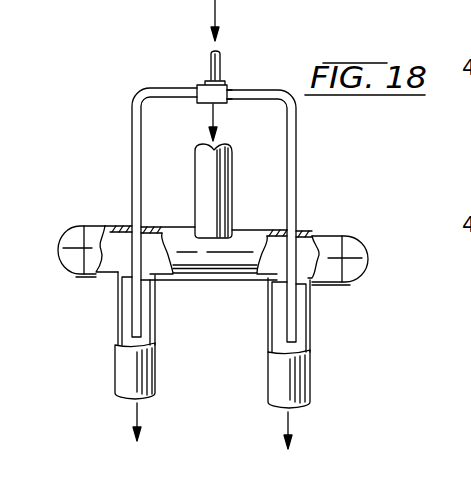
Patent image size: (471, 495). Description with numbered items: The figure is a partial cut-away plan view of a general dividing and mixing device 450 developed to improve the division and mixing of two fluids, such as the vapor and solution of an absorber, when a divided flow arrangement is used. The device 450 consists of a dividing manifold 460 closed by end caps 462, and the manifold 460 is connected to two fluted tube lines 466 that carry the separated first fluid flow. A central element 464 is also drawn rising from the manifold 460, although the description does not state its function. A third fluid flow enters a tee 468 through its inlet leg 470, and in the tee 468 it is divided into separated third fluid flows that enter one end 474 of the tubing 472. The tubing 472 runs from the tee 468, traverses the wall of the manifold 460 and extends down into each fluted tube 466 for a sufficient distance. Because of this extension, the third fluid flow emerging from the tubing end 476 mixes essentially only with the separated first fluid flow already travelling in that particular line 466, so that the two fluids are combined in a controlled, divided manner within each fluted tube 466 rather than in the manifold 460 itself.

The dividing and mixing device 450 is at (116, 196).
The dividing manifold 460 is at (202, 257).
The end caps 462 is at (351, 247).
The central nozzle 464 is at (205, 184).
The fluted tube lines 466 is at (125, 364).
The tee 468 is at (222, 93).
The inlet leg 470 is at (211, 63).
The tubing 472 is at (132, 125).
The tubing end 474 is at (229, 96).
The tubing end 476 is at (130, 307).